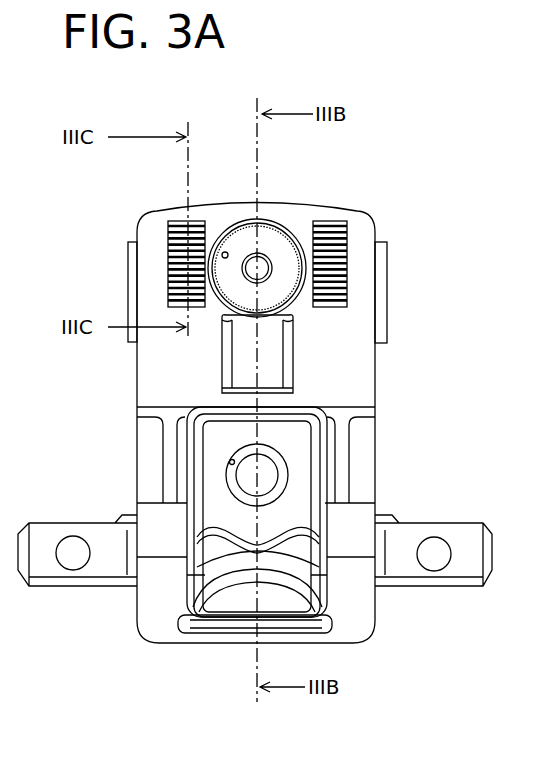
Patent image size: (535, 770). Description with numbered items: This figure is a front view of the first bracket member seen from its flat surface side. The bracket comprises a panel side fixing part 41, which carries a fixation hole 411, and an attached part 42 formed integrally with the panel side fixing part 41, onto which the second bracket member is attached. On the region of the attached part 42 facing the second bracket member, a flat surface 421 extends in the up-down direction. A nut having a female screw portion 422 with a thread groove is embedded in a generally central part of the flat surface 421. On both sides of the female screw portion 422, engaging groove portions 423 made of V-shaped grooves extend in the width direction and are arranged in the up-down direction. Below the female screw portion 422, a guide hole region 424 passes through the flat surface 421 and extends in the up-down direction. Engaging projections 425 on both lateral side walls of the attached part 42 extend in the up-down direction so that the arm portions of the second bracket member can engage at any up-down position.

The panel side fixing part 41 is at (255, 552).
The fixation hole 411 is at (248, 487).
The attached part 42 is at (259, 245).
The flat surface 421 is at (353, 328).
The female screw portion 422 is at (243, 238).
The engaging groove portions 423 is at (173, 302).
The guide hole region 424 is at (268, 355).
The engaging projections 425 is at (128, 262).